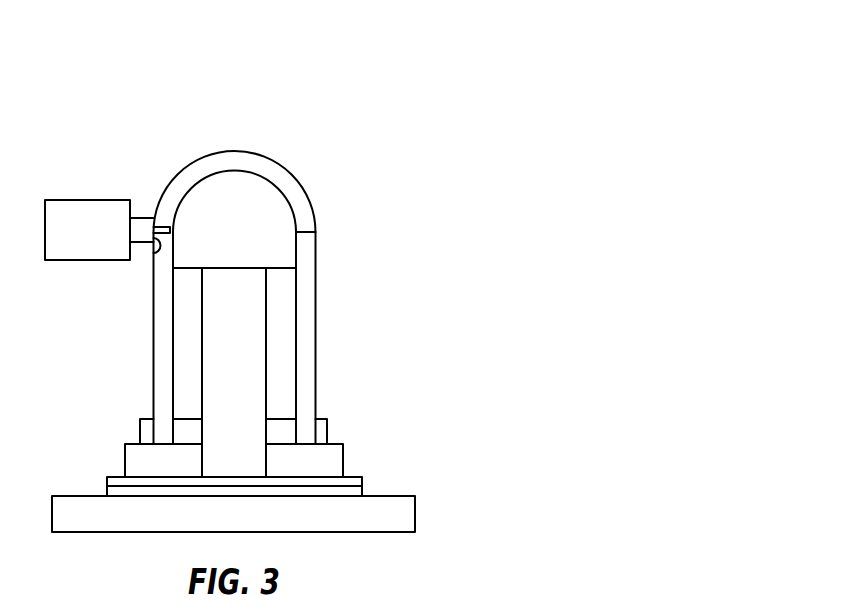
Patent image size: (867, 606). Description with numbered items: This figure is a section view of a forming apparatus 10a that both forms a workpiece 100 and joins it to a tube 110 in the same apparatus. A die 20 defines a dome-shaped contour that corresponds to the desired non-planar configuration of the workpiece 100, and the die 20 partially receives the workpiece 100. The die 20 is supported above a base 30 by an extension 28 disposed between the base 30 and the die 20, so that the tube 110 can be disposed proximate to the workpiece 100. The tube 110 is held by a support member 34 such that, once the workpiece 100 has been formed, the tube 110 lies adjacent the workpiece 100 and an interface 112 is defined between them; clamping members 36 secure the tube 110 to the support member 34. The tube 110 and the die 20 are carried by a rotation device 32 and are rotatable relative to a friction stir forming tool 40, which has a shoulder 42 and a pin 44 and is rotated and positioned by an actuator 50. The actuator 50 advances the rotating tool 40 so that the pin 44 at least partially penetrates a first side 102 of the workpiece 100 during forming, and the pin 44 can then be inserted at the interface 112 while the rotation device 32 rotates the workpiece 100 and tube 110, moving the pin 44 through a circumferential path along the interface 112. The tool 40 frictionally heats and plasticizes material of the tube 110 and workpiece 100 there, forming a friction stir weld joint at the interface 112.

The forming apparatus 10a is at (498, 100).
The die 20 is at (263, 193).
The extension 28 is at (267, 378).
The base 30 is at (417, 505).
The rotation device 32 is at (363, 480).
The support member 34 is at (124, 448).
The clamping members 36 is at (140, 425).
The friction stir forming tool 40 is at (142, 207).
The shoulder 42 is at (155, 242).
The pin 44 is at (172, 228).
The actuator 50 is at (77, 200).
The workpiece 100 is at (303, 203).
The first side 102 is at (237, 150).
The tube 110 is at (318, 342).
The interface 112 is at (318, 233).